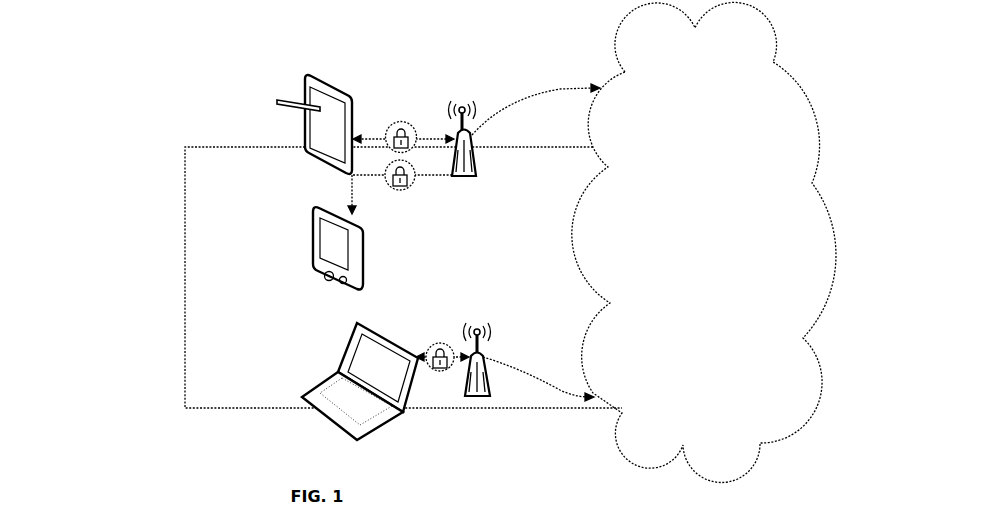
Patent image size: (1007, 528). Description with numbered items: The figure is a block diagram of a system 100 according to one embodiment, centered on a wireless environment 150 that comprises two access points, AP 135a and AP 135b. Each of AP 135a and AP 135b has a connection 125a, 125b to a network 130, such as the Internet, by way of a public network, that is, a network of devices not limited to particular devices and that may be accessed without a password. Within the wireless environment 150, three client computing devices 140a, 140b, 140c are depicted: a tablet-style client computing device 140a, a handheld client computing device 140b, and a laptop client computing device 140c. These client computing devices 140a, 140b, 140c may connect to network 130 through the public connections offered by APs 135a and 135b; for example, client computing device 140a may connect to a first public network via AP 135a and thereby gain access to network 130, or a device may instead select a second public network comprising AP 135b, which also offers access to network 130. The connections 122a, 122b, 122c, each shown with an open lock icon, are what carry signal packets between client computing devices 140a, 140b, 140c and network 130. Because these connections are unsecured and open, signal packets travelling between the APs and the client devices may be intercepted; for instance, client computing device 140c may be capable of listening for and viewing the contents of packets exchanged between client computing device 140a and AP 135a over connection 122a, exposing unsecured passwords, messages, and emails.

The system 100 is at (126, 205).
The wireless environment 150 is at (185, 307).
The network 130 is at (693, 261).
The client computing device 140a is at (297, 96).
The client computing device 140b is at (313, 218).
The client computing device 140c is at (317, 387).
The connection 122a is at (400, 121).
The connection 122b is at (410, 186).
The connection 122c is at (440, 343).
The connection 125a is at (573, 88).
The connection 125b is at (540, 383).
The AP 135a is at (462, 103).
The AP 135b is at (478, 398).